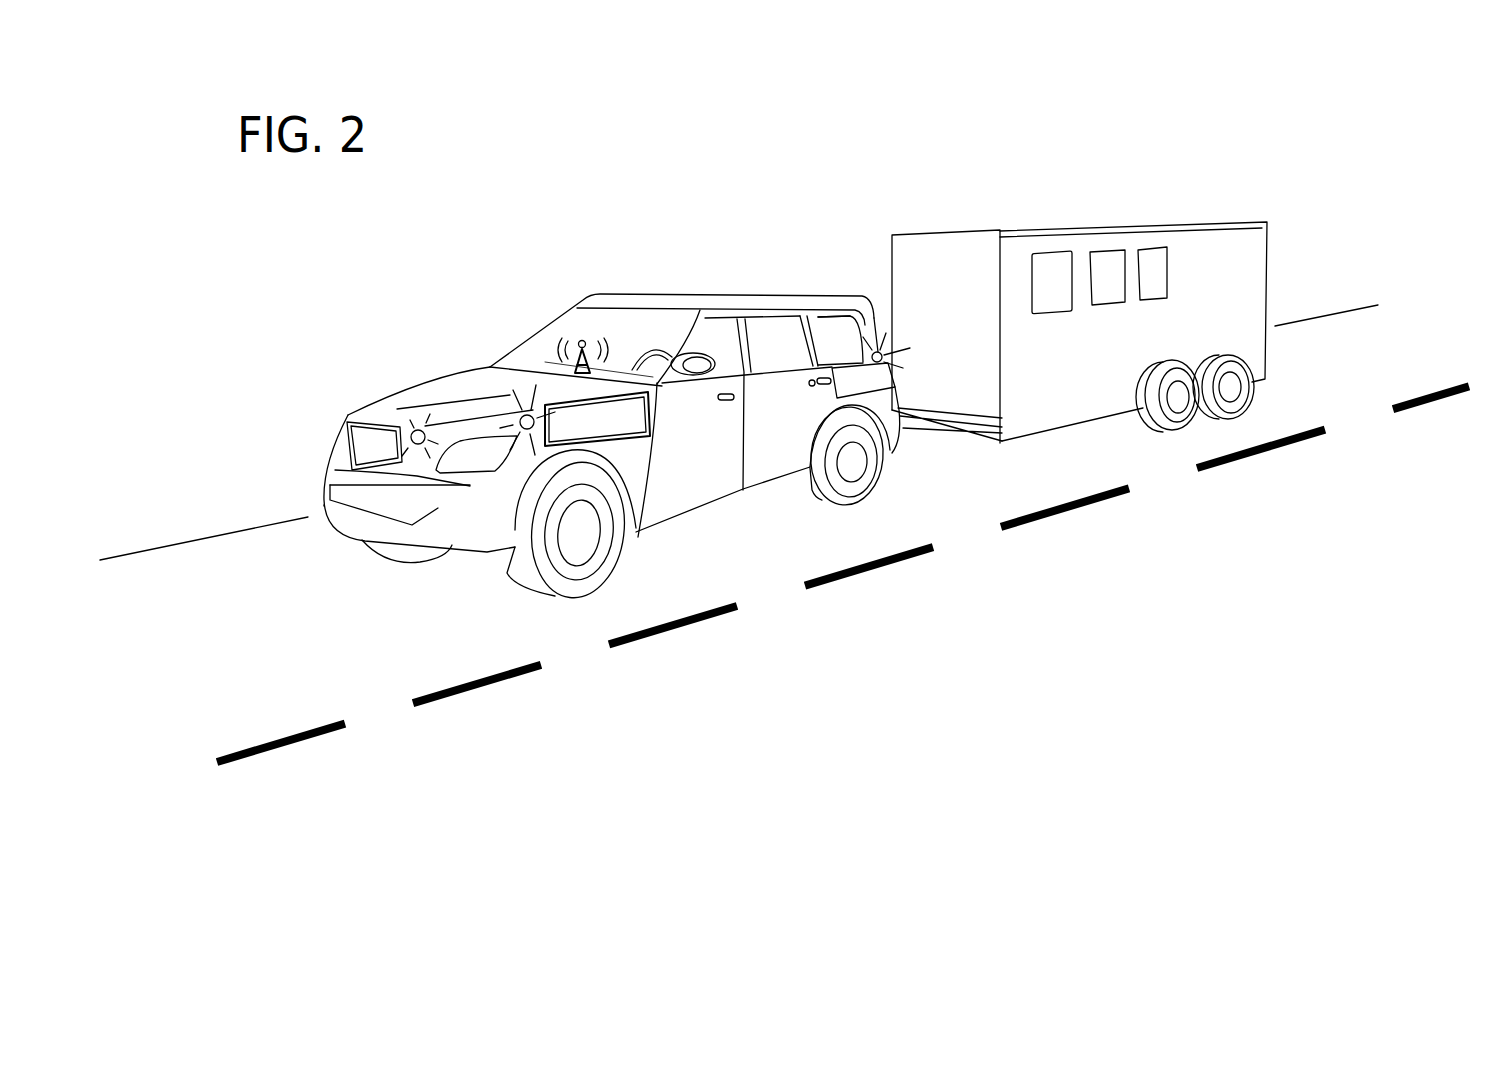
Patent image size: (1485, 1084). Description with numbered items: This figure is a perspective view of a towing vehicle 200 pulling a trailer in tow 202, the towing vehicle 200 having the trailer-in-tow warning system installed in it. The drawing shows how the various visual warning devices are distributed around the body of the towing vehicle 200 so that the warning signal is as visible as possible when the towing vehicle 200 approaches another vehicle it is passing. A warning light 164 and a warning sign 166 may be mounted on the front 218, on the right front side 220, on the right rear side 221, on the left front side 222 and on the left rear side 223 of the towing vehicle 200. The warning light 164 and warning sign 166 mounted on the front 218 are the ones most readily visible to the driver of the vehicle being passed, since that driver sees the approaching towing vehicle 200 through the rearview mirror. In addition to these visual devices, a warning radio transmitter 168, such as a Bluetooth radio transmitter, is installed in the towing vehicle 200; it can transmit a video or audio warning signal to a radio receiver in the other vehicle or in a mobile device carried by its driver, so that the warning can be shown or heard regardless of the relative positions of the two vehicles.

The warning light 164 is at (412, 433).
The warning sign 166 is at (347, 432).
The warning radio transmitter 168 is at (577, 352).
The towing vehicle 200 is at (504, 401).
The trailer in tow 202 is at (1097, 372).
The front 218 is at (442, 508).
The right front side 220 is at (398, 387).
The right rear side 221 is at (732, 295).
The left front side 222 is at (632, 447).
The left rear side 223 is at (848, 365).